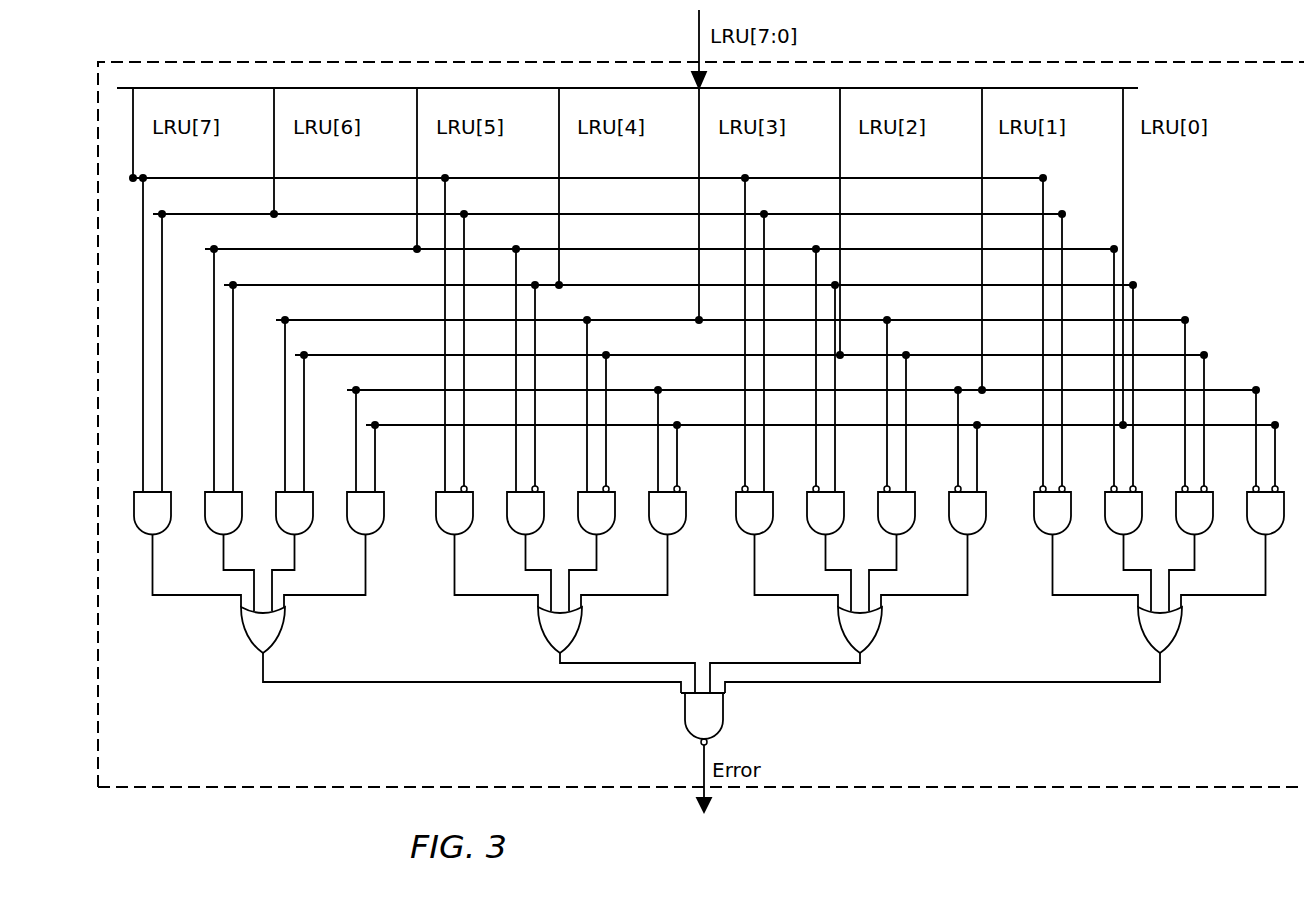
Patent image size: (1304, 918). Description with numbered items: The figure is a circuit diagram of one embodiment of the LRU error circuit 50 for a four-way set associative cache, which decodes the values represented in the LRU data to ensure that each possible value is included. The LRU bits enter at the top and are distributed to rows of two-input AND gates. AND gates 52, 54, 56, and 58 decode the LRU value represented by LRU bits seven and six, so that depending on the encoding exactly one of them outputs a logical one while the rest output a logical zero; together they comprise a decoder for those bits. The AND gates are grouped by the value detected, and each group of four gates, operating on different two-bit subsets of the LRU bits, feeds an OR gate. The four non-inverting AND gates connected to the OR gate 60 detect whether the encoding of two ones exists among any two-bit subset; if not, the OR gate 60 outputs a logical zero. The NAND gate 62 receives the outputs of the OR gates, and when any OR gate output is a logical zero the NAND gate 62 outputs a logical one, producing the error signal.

The LRU error circuit 50 is at (350, 777).
The AND gate 52 is at (163, 534).
The AND gate 54 is at (442, 532).
The AND gate 56 is at (742, 532).
The AND gate 58 is at (1042, 532).
The OR gate 60 is at (278, 623).
The NAND gate 62 is at (688, 720).